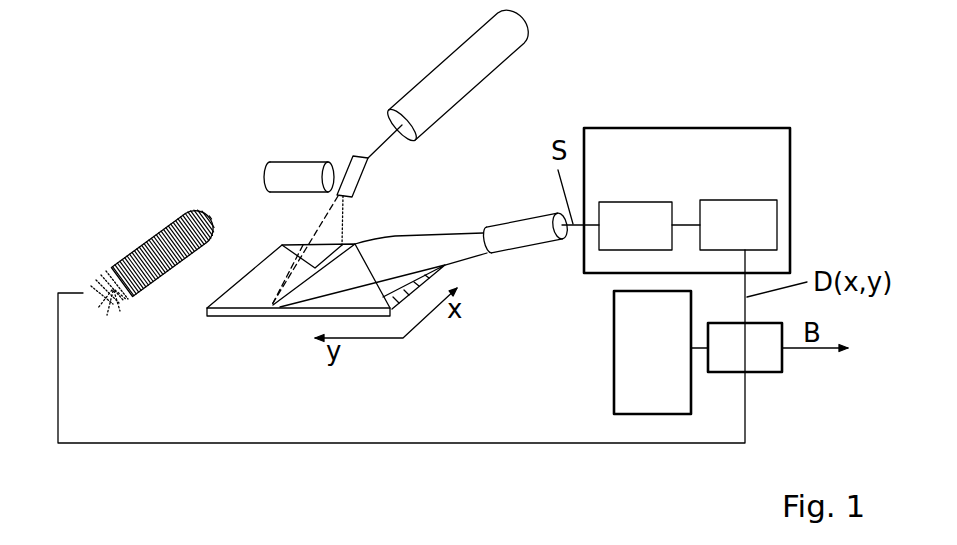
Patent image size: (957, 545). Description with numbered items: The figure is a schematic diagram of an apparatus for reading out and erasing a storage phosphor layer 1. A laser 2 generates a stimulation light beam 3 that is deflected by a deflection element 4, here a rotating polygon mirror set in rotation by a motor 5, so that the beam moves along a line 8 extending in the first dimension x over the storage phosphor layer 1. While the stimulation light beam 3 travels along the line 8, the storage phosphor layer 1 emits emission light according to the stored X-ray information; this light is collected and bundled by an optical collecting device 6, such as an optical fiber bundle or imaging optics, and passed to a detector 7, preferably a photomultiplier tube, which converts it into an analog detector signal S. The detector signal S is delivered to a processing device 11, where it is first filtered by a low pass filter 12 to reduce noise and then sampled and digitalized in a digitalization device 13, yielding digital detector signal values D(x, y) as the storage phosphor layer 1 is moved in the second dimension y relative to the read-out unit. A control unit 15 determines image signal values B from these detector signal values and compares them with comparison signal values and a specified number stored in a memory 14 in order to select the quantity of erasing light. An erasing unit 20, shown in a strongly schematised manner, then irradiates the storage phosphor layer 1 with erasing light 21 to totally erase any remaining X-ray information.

The storage phosphor layer 1 is at (227, 317).
The laser 2 is at (438, 68).
The stimulation light beam 3 is at (380, 143).
The deflection element 4 is at (357, 160).
The motor 5 is at (287, 160).
The optical collecting device 6 is at (393, 235).
The detector 7 is at (528, 217).
The line 8 is at (282, 245).
The processing device 11 is at (617, 127).
The low pass filter 12 is at (632, 200).
The digitalization device 13 is at (733, 200).
The memory 14 is at (613, 343).
The control unit 15 is at (760, 360).
The erasing unit 20 is at (137, 250).
The erasing light 21 is at (112, 313).